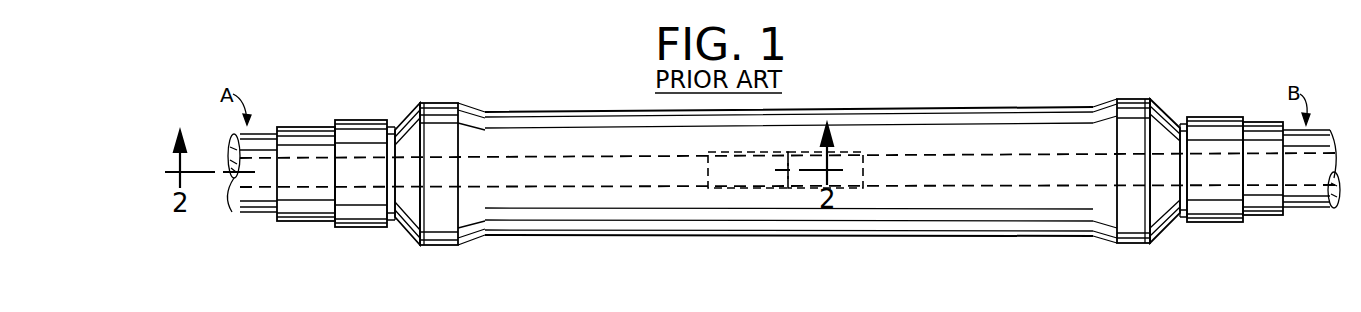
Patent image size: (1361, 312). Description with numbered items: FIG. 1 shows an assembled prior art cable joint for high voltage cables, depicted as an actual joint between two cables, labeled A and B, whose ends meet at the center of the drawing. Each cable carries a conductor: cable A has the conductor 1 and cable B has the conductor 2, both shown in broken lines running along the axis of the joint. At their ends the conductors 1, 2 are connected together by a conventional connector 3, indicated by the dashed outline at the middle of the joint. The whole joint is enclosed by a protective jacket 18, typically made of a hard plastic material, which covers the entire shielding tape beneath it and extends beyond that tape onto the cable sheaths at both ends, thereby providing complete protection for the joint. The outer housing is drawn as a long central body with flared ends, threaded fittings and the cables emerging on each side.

The conductor 1 is at (693, 156).
The conductor 2 is at (1010, 153).
The connector 3 is at (860, 149).
The protective jacket 18 is at (608, 236).